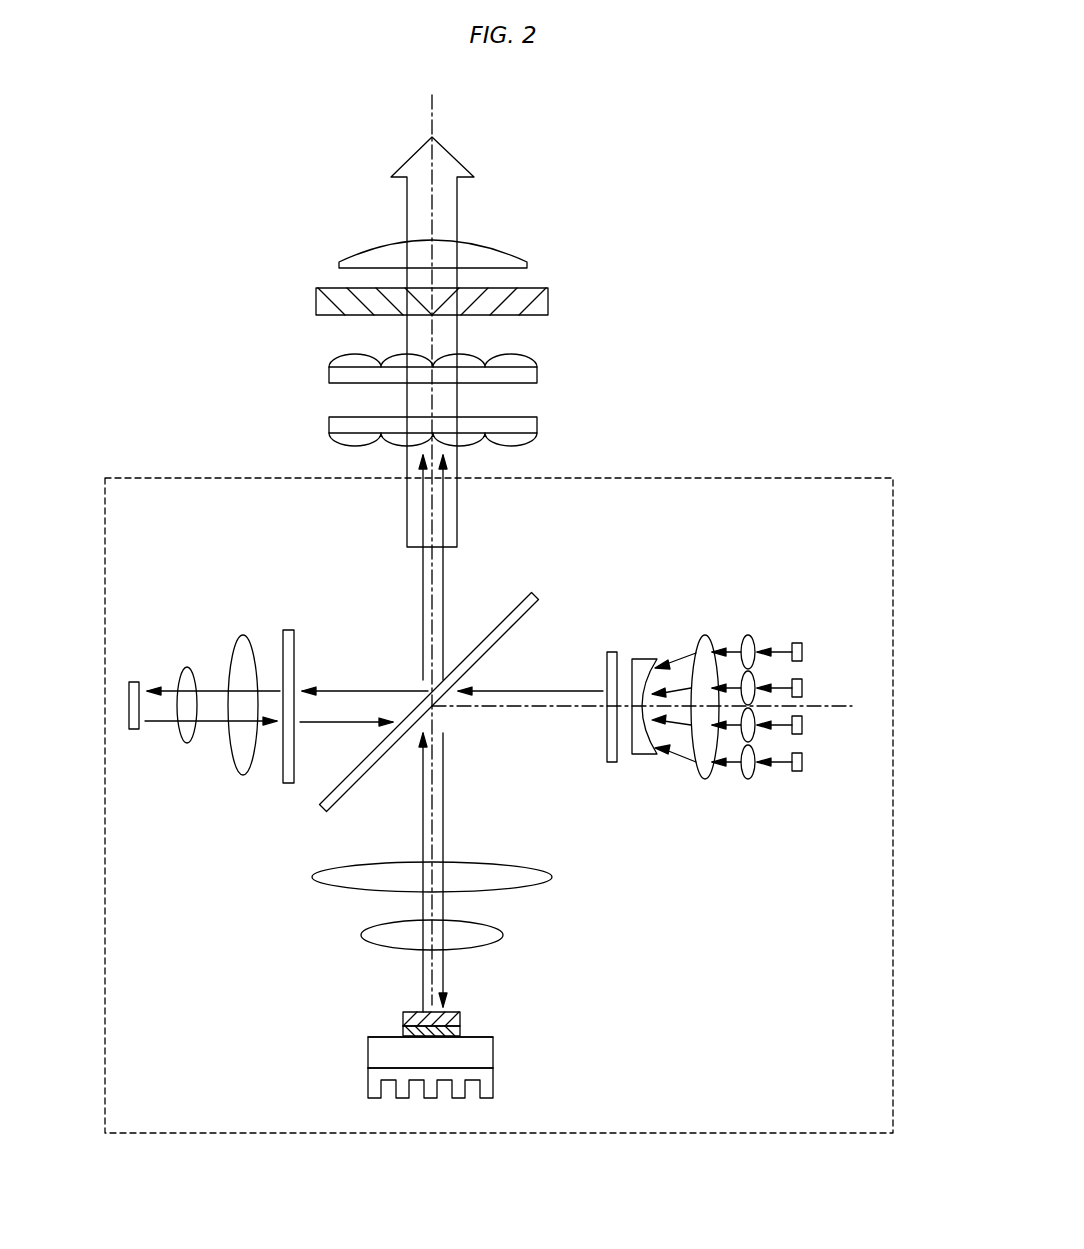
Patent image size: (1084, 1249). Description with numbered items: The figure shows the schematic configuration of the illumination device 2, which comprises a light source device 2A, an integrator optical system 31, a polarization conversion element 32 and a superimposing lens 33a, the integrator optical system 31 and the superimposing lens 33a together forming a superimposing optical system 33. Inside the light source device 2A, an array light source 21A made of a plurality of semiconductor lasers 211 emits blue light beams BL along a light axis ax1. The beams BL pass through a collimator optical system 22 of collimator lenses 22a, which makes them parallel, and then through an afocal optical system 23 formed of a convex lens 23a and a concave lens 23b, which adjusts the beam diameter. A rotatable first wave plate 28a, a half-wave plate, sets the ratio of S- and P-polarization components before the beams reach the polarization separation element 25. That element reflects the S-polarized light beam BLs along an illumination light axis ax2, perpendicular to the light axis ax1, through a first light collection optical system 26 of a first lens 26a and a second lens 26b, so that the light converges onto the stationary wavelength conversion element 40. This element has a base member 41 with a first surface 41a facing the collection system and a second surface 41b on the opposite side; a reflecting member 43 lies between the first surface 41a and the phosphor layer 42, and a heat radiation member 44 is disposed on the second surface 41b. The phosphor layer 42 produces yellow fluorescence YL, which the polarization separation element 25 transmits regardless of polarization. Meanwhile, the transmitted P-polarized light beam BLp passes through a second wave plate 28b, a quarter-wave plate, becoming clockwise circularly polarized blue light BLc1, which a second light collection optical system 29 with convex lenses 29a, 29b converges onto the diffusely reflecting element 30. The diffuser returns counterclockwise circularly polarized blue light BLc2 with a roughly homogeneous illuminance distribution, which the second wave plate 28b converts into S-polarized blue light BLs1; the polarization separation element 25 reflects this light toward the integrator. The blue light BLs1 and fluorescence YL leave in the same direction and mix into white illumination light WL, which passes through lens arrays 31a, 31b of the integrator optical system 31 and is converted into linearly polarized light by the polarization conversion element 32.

The illumination device 2 is at (818, 196).
The light source device 2A is at (780, 476).
The array light source 21A is at (818, 660).
The semiconductor laser 211 is at (805, 648).
The collimator optical system 22 is at (749, 642).
The collimator lens 22a is at (746, 634).
The afocal optical system 23 is at (683, 659).
The convex lens 23a is at (711, 678).
The concave lens 23b is at (646, 658).
The polarization separation element 25 is at (522, 598).
The first light collection optical system 26 is at (496, 900).
The first lens 26a is at (535, 872).
The second lens 26b is at (495, 925).
The first wave plate 28a is at (612, 651).
The second wave plate 28b is at (290, 628).
The second light collection optical system 29 is at (203, 648).
The convex lens 29a is at (186, 665).
The convex lens 29b is at (229, 670).
The diffusely reflecting element 30 is at (134, 680).
The integrator optical system 31 is at (508, 400).
The lens array 31a is at (477, 430).
The lens array 31b is at (537, 377).
The polarization conversion element 32 is at (548, 302).
The superimposing optical system 33 is at (498, 250).
The superimposing lens 33a is at (512, 250).
The wavelength conversion element 40 is at (414, 1035).
The base member 41 is at (486, 1056).
The first surface 41a is at (374, 1037).
The second surface 41b is at (378, 1072).
The phosphor layer 42 is at (455, 1018).
The reflecting member 43 is at (460, 1032).
The heat radiation member 44 is at (486, 1090).
The illumination light WL is at (406, 215).
The fluorescence YL is at (420, 598).
The light beam BL is at (564, 689).
The light beam BLs is at (444, 834).
The blue light BLs1 is at (445, 590).
The light beam BLp is at (342, 689).
The blue light BLc1 is at (270, 688).
The blue light BLc2 is at (267, 725).
The light axis ax1 is at (828, 710).
The illumination light axis ax2 is at (434, 101).